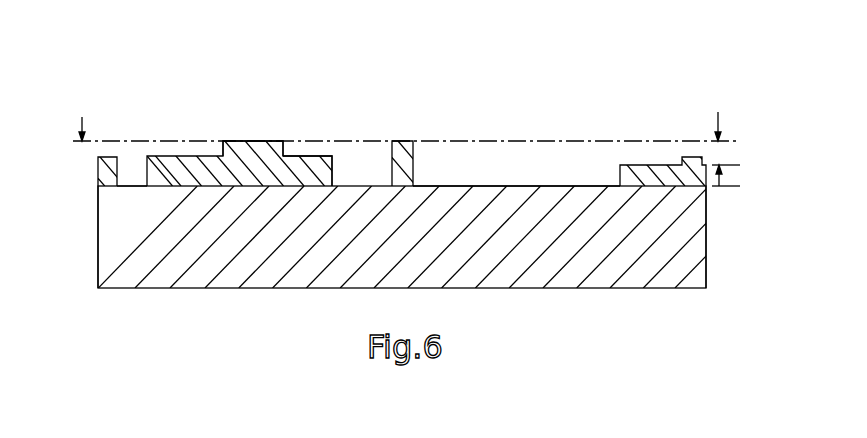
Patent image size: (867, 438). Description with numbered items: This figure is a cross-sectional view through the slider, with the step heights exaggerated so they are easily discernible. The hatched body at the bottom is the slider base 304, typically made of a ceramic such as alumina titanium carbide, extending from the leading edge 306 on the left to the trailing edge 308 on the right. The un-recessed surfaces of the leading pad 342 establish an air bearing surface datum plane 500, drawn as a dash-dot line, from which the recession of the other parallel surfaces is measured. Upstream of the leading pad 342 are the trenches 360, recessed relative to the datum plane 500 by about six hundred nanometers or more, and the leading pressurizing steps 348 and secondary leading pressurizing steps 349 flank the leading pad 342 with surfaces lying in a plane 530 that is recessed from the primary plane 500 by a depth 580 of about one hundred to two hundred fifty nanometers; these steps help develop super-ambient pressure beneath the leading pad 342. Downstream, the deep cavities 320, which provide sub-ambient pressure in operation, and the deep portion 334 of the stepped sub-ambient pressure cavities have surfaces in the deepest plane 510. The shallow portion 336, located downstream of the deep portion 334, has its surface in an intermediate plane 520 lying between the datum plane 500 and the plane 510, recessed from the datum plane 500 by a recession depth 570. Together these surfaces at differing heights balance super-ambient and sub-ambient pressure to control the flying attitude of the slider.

The base 304 is at (633, 273).
The leading edge 306 is at (98, 258).
The trailing edge 308 is at (707, 247).
The deep cavities 320 is at (360, 186).
The deep portion 334 is at (522, 186).
The shallow portion 336 is at (643, 165).
The leading pads 342 is at (253, 141).
The leading pressurizing steps 348 is at (193, 155).
The secondary leading pressurizing steps 349 is at (300, 156).
The trenches 360 is at (131, 186).
The air bearing surface datum plane 500 is at (405, 141).
The plane 510 is at (744, 191).
The intermediate plane 520 is at (744, 171).
The plane 530 is at (97, 157).
The recession depth 570 is at (721, 116).
The depth 580 is at (86, 116).